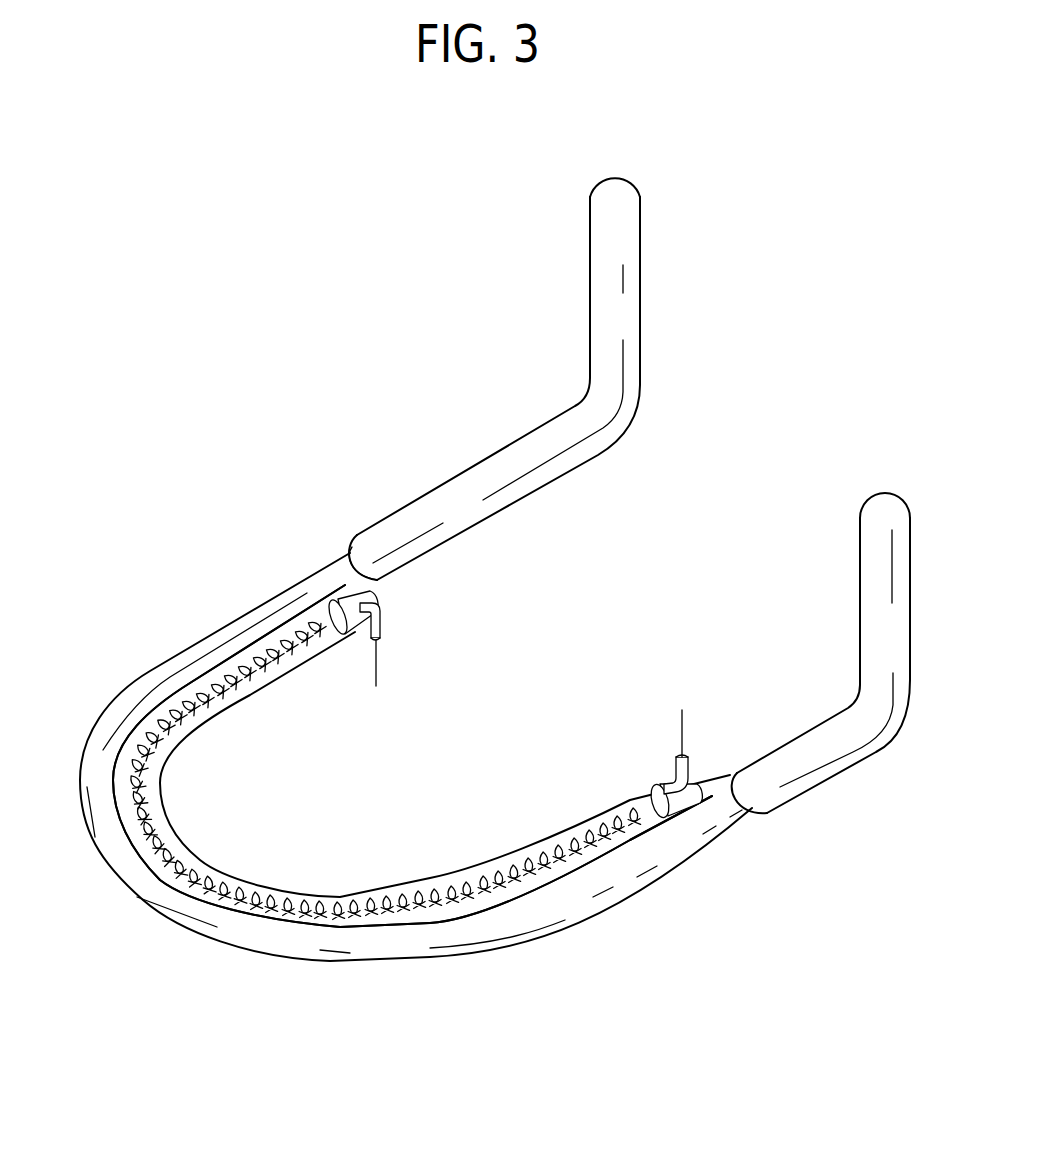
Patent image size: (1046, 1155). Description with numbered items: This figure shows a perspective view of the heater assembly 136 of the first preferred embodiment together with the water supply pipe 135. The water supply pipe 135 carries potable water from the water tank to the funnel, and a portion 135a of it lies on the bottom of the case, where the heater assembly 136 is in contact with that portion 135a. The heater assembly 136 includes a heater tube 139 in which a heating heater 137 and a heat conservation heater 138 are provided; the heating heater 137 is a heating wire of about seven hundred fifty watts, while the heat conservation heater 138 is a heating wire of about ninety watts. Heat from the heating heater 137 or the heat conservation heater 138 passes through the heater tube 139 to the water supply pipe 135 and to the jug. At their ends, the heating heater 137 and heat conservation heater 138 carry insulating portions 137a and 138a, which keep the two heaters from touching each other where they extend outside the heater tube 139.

The water supply pipe 135 is at (606, 318).
The portion of the water supply pipe 135a is at (400, 952).
The heater assembly 136 is at (548, 840).
The heating heater 137 is at (340, 590).
The insulating portion 137a is at (354, 585).
The heat conservation heater 138 is at (361, 654).
The insulating portion 138a is at (384, 621).
The heater tube 139 is at (195, 845).